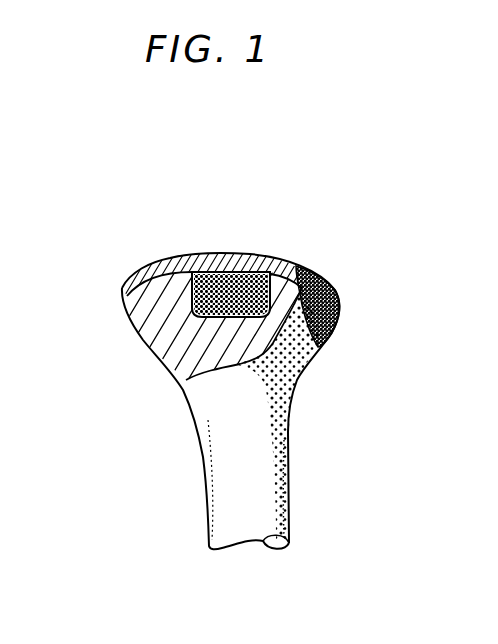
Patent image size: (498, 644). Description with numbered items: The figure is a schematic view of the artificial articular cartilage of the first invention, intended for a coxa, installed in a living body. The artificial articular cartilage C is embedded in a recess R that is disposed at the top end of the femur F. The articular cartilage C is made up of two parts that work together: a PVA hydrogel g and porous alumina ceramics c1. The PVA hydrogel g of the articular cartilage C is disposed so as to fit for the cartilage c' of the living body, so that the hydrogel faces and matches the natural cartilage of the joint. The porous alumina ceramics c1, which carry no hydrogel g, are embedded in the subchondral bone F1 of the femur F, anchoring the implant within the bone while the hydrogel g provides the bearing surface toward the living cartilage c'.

The articular cartilage C is at (275, 167).
The PVA hydrogel g is at (200, 253).
The porous alumina ceramics c1 is at (243, 257).
The cartilage of the living body c' is at (240, 266).
The recess R is at (167, 367).
The subchondral bone F1 is at (230, 335).
The femur F is at (263, 465).